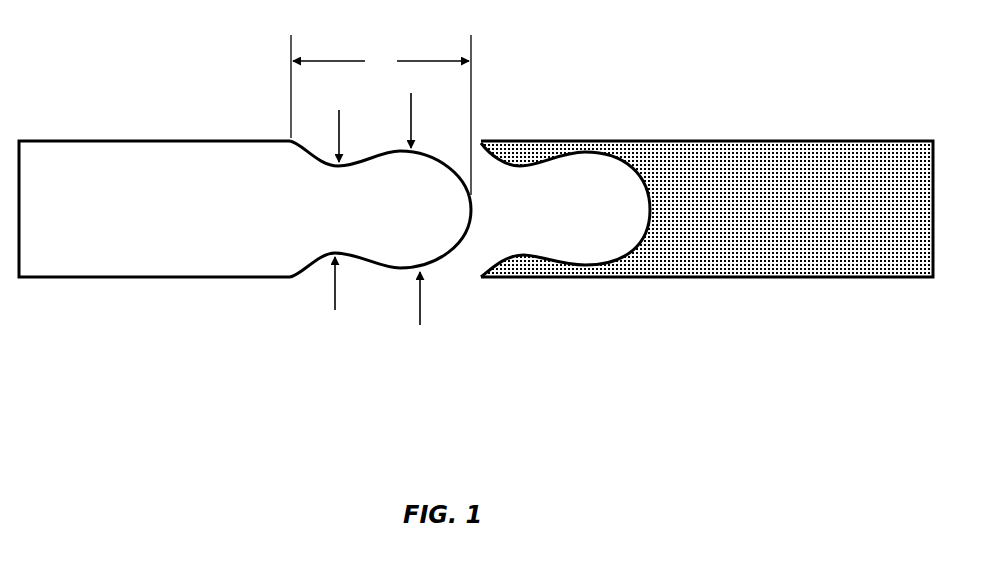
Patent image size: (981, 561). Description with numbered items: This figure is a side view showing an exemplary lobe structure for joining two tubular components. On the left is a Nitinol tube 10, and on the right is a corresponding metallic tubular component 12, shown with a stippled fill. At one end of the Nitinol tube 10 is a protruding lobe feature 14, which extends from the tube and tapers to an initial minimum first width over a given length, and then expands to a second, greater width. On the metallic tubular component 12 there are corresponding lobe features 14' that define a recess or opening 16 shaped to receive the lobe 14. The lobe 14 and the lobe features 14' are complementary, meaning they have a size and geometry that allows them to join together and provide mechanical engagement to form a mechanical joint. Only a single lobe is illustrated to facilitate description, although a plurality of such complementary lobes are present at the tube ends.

The Nitinol tube 10 is at (114, 259).
The metallic tubular component 12 is at (802, 256).
The lobe feature 14 is at (399, 223).
The lobe features 14' is at (539, 223).
The recess or opening 16 is at (584, 168).